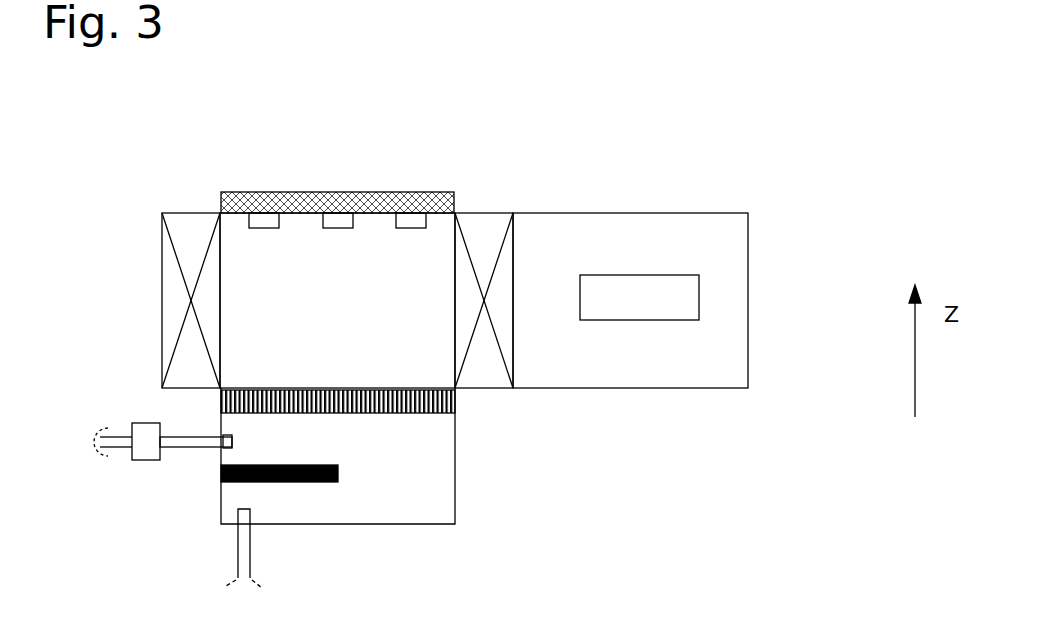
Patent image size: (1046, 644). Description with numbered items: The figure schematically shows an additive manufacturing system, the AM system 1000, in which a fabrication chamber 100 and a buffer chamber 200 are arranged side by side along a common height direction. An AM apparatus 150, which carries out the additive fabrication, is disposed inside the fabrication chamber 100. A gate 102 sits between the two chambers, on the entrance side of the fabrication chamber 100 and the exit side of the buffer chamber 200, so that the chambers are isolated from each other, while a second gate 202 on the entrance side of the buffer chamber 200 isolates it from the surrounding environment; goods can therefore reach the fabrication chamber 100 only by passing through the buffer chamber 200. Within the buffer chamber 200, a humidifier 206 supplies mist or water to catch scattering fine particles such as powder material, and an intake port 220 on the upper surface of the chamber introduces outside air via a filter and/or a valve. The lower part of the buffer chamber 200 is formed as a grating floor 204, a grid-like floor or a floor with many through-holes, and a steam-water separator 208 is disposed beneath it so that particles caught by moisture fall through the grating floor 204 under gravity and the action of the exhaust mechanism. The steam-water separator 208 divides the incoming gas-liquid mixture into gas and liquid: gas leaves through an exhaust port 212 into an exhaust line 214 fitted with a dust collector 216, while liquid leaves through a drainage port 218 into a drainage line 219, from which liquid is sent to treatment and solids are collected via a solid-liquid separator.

The AM system 1000 is at (400, 43).
The fabrication chamber 100 is at (630, 235).
The gate 102 is at (484, 230).
The AM apparatus 150 is at (699, 303).
The buffer chamber 200 is at (374, 250).
The gate 202 is at (192, 224).
The grating floor 204 is at (440, 413).
The humidifier 206 is at (339, 222).
The steam-water separator 208 is at (440, 445).
The exhaust port 212 is at (232, 447).
The exhaust line 214 is at (195, 447).
The dust collector 216 is at (143, 422).
The drainage port 218 is at (250, 513).
The drainage line 219 is at (250, 553).
The intake port 220 is at (424, 205).